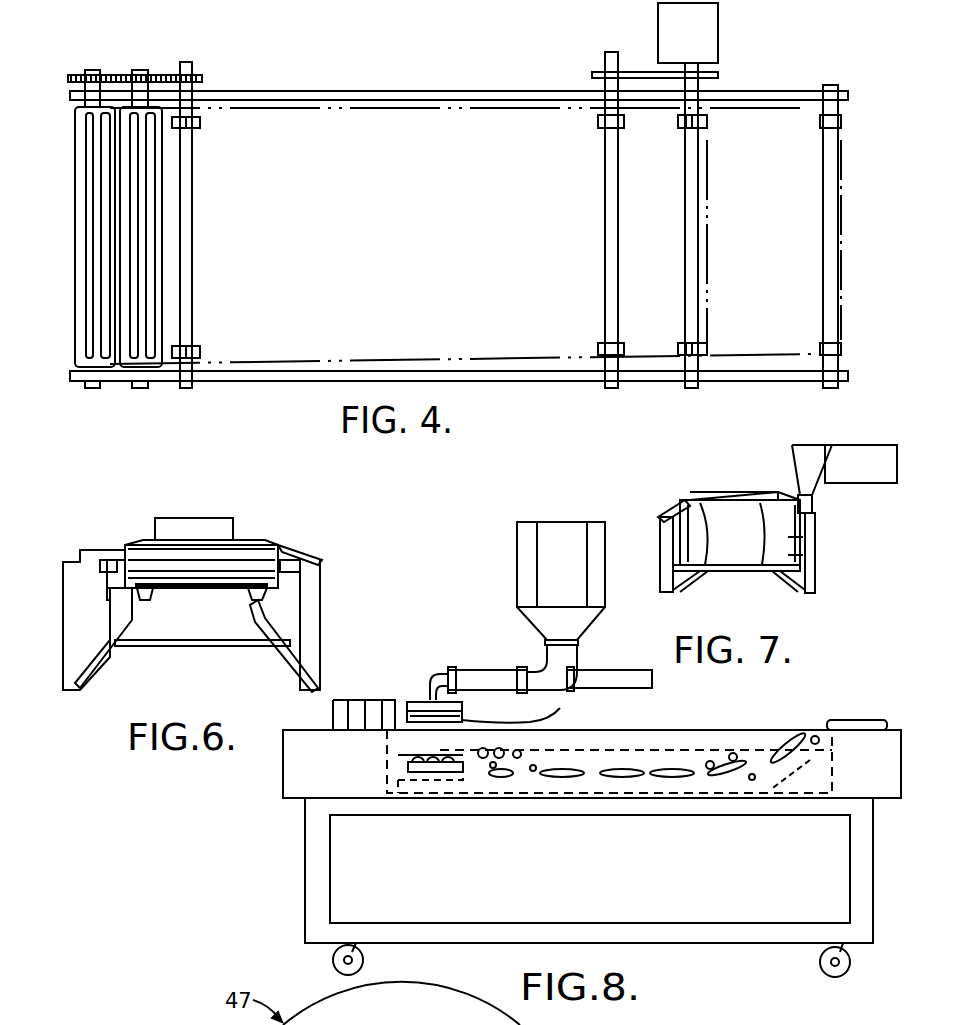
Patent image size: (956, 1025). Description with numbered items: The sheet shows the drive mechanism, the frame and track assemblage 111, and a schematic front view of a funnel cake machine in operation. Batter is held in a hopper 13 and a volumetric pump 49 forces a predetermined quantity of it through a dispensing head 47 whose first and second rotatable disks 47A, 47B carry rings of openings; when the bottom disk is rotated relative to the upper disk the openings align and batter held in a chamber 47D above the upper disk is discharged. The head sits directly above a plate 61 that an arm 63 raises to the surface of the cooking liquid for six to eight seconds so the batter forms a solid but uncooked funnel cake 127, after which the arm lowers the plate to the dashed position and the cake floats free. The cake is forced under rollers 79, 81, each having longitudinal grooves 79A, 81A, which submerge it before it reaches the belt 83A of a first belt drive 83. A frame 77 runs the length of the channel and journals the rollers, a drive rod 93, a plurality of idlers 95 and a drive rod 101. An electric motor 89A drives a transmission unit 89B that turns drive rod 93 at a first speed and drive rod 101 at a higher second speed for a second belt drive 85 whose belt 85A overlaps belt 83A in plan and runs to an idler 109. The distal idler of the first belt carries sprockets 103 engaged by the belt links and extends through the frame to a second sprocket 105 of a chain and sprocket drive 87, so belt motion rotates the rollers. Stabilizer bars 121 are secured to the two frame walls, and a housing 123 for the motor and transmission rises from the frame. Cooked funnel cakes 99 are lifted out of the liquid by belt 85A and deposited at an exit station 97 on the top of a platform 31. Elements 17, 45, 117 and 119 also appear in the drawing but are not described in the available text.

In FIG. 8, the hopper 13 is at (517, 565).
In FIG. 8, the table 17 is at (822, 906).
In FIG. 8, the platform 31 is at (862, 770).
In FIG. 8, the elbow pipe 45 is at (545, 660).
In FIG. 8, the dispensing head 47 is at (412, 702).
In FIG. 8, the first rotatable disk 47A is at (465, 713).
In FIG. 8, the second rotatable disk 47B is at (548, 720).
In FIG. 8, the chamber 47D is at (425, 700).
In FIG. 8, the volumetric pump 49 is at (600, 668).
In FIG. 8, the plate 61 is at (470, 785).
In FIG. 8, the arm 63 is at (378, 710).
In FIG. 4, the frame 77 is at (283, 91).
In FIG. 6, the frame 77 is at (63, 608).
In FIG. 7, the frame 77 is at (815, 548).
In FIG. 4, the roller 79 is at (86, 368).
In FIG. 6, the roller 79 is at (280, 542).
In FIG. 4, the groove 79A is at (118, 372).
In FIG. 4, the roller 81 is at (160, 290).
In FIG. 4, the groove 81A is at (143, 273).
In FIG. 4, the first belt drive 83 is at (455, 78).
In FIG. 4, the belt 83A is at (434, 238).
In FIG. 6, the belt 83A is at (193, 590).
In FIG. 8, the belt 83A is at (640, 770).
In FIG. 4, the second belt drive 85 is at (812, 85).
In FIG. 4, the belt 85A is at (792, 192).
In FIG. 6, the belt 85A is at (190, 520).
In FIG. 7, the belt 85A is at (760, 541).
In FIG. 8, the belt 85A is at (780, 775).
In FIG. 4, the chain and sprocket drive 87 is at (133, 58).
In FIG. 4, the electric motor 89A is at (708, 42).
In FIG. 4, the transmission unit 89B is at (718, 75).
In FIG. 4, the drive rod 93 is at (685, 318).
In FIG. 4, the idler 95 is at (195, 190).
In FIG. 6, the idler 95 is at (300, 588).
In FIG. 8, the exit station 97 is at (891, 730).
In FIG. 8, the cooked funnel cakes 99 is at (830, 720).
In FIG. 4, the drive rod 101 is at (605, 318).
In FIG. 4, the sprockets 103 is at (200, 123).
In FIG. 4, the second sprocket 105 is at (200, 78).
In FIG. 4, the idler 109 is at (838, 200).
In FIG. 6, the assemblage 111 is at (133, 514).
In FIG. 7, the assemblage 111 is at (718, 468).
In FIG. 6, the left leg 117 is at (133, 610).
In FIG. 6, the right leg 119 is at (258, 612).
In FIG. 6, the stabilizer bar 121 is at (240, 646).
In FIG. 7, the stabilizer bar 121 is at (770, 571).
In FIG. 7, the housing 123 is at (897, 450).
In FIG. 8, the uncooked funnel cake 127 is at (398, 748).